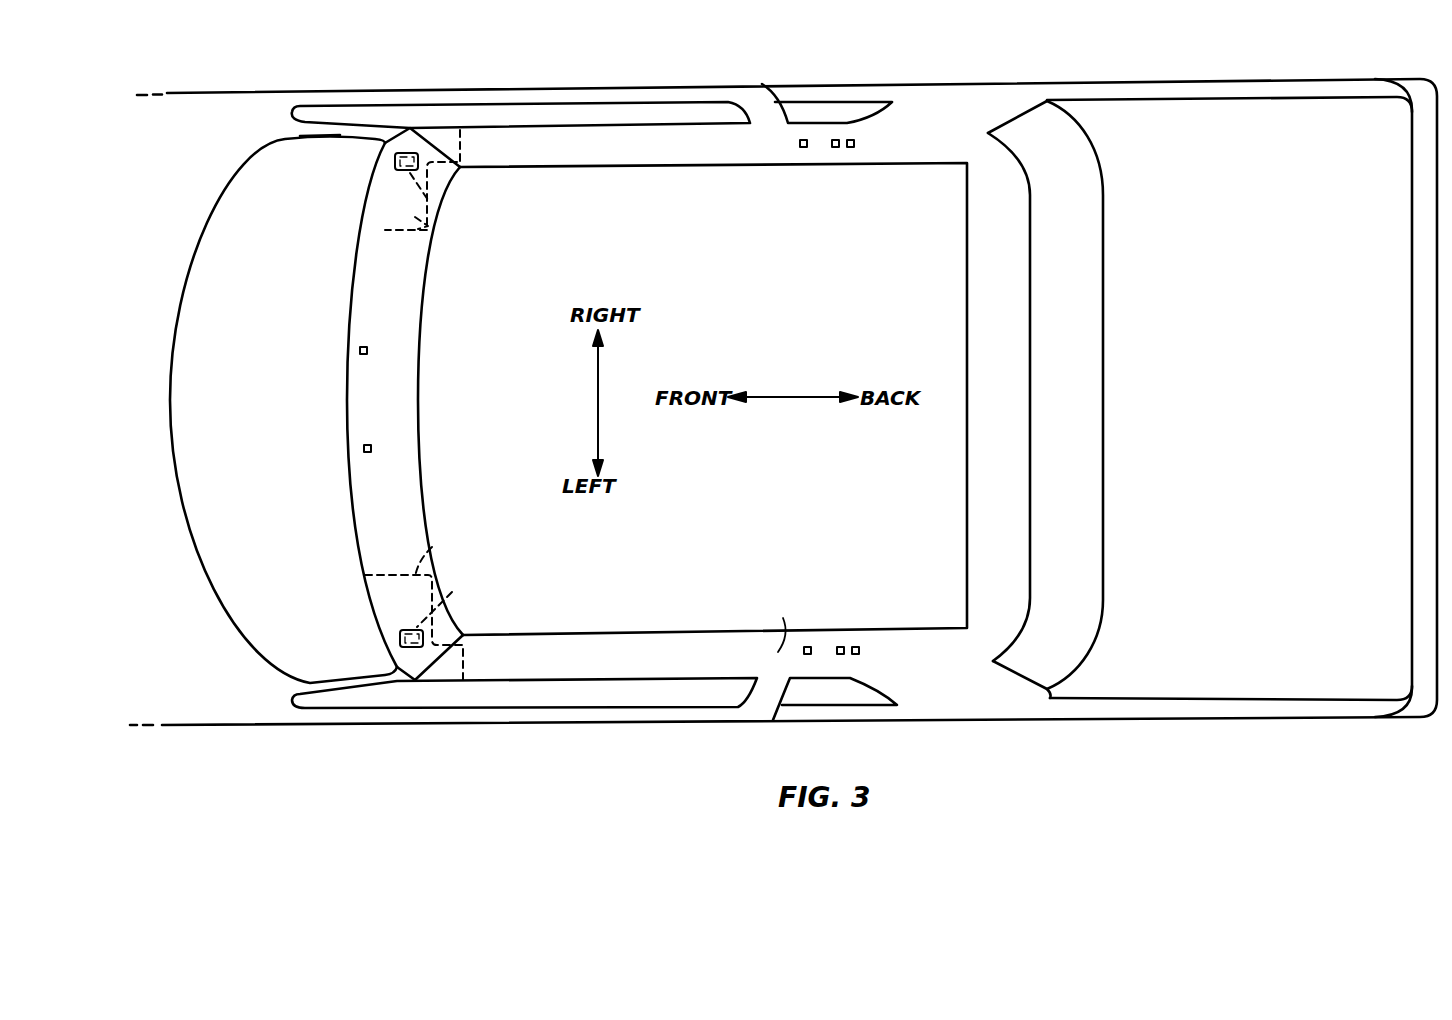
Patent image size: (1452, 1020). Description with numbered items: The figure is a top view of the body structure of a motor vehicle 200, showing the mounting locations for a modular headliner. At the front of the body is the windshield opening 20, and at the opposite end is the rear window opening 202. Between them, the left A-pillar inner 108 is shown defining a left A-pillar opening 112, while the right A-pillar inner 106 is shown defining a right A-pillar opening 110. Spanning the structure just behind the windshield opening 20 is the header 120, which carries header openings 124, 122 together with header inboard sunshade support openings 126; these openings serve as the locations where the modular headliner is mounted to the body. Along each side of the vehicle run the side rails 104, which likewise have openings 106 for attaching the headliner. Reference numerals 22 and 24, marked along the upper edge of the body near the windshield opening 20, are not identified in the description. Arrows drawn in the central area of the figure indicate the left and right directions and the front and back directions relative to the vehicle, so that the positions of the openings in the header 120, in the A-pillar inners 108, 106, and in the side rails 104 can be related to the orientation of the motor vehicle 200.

The windshield opening 20 is at (316, 134).
The left side rail 22 is at (350, 683).
The right side rail 24 is at (343, 132).
The side rails 104 is at (767, 625).
The right A-pillar inner 106 is at (850, 148).
The left A-pillar inner 108 is at (432, 547).
The right A-pillar opening 110 is at (447, 205).
The left A-pillar opening 112 is at (452, 592).
The header 120 is at (367, 494).
The header opening 122 is at (395, 162).
The header opening 124 is at (400, 636).
The header inboard sunshade support openings 126 is at (363, 355).
The motor vehicle 200 is at (650, 722).
The rear window opening 202 is at (1031, 110).